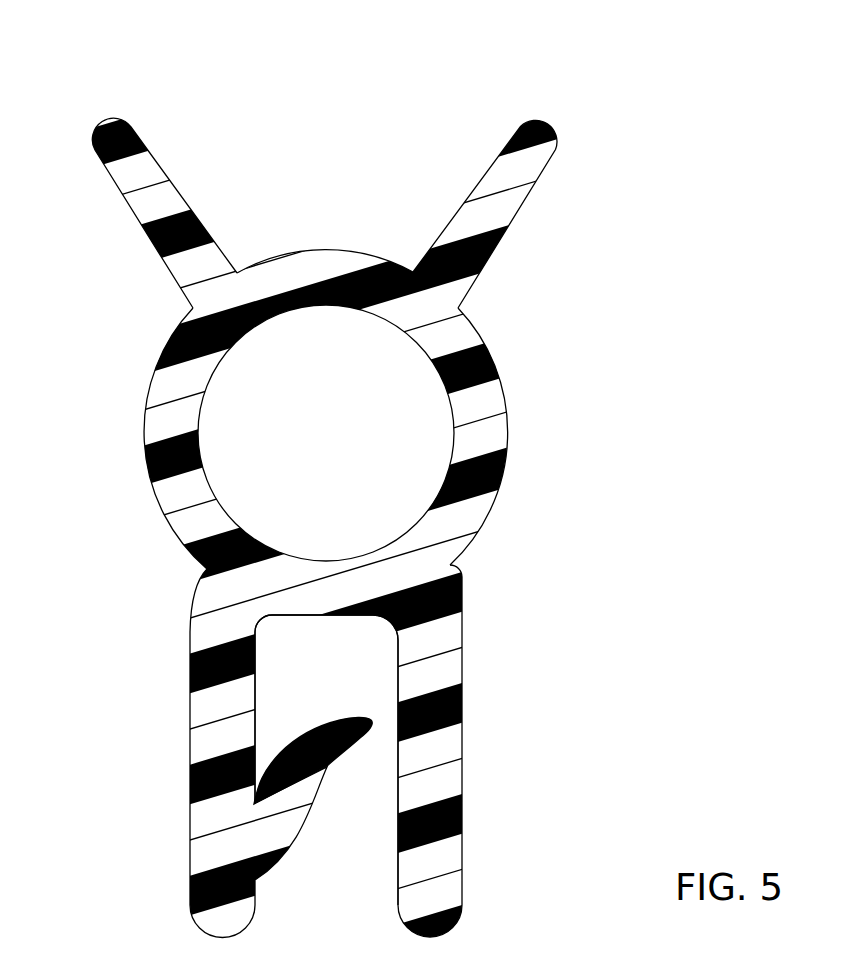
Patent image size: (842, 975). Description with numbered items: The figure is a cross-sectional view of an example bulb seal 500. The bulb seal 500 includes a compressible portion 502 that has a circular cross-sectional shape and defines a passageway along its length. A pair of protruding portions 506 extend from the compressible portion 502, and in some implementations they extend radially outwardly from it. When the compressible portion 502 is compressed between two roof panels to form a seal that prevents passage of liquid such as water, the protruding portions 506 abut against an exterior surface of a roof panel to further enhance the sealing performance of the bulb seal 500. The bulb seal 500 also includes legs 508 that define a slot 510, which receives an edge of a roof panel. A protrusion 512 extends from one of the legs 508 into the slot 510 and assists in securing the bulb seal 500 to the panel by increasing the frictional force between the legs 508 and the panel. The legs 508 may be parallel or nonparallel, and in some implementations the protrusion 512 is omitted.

The bulb seal 500 is at (437, 72).
The compressible portion 502 is at (508, 433).
The protruding portions 506 is at (160, 166).
The legs 508 is at (190, 731).
The slot 510 is at (339, 853).
The protrusion 512 is at (327, 767).